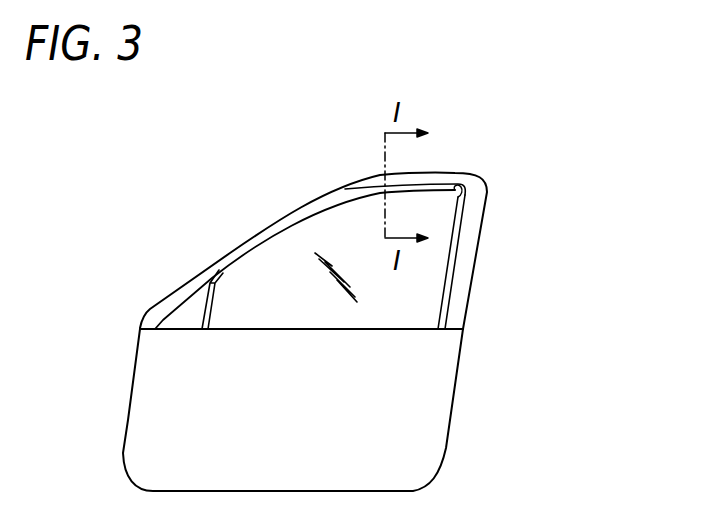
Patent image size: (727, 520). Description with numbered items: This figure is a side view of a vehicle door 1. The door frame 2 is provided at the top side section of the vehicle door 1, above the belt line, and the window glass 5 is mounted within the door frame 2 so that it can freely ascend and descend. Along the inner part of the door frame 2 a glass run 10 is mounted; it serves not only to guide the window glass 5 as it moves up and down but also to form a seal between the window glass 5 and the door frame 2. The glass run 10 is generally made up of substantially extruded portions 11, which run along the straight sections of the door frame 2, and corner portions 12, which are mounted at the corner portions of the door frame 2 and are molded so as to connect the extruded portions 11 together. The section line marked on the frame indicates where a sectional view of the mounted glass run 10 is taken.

The vehicle door 1 is at (468, 400).
The door frame 2 is at (243, 237).
The window glass 5 is at (427, 285).
The glass run 10 is at (455, 260).
The extruded portions 11 is at (354, 190).
The corner portions 12 is at (213, 276).